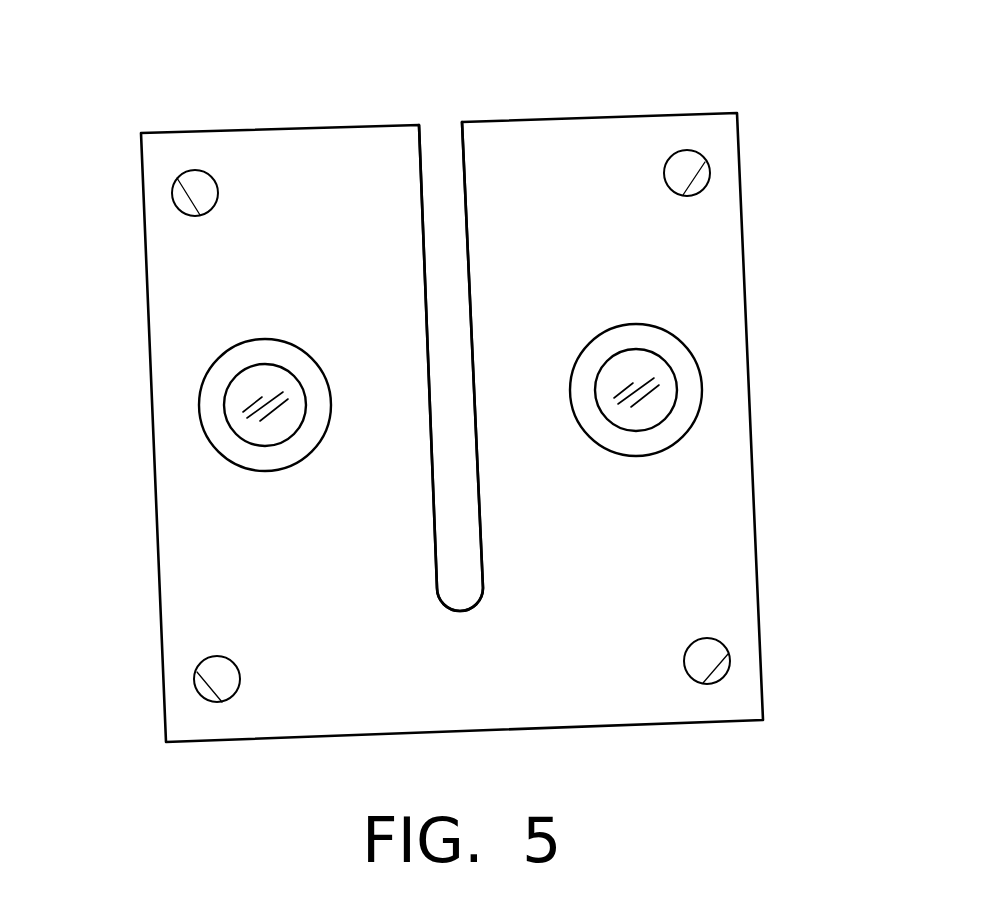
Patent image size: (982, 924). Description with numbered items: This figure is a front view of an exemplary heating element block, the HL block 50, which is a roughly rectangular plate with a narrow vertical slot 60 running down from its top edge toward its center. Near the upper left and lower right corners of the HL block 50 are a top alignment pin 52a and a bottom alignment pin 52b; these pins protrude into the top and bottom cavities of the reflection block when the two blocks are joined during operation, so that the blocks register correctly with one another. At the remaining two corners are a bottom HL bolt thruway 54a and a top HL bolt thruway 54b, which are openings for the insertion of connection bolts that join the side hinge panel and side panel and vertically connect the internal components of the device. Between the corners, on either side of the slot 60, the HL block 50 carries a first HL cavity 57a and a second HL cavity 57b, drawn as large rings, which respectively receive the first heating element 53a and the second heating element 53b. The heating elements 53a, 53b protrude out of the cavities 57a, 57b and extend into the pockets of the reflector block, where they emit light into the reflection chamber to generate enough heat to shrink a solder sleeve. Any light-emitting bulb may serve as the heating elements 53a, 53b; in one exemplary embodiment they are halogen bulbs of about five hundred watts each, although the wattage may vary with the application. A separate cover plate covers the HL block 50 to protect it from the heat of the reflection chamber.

The HL block 50 is at (748, 225).
The slot 60 is at (436, 112).
The top alignment pin 52a is at (177, 178).
The bottom alignment pin 52b is at (728, 654).
The bottom HL bolt thruway 54a is at (197, 672).
The top HL bolt thruway 54b is at (705, 162).
The first HL cavity 57a is at (215, 366).
The second HL cavity 57b is at (688, 347).
The first heating element 53a is at (244, 438).
The second heating element 53b is at (658, 422).